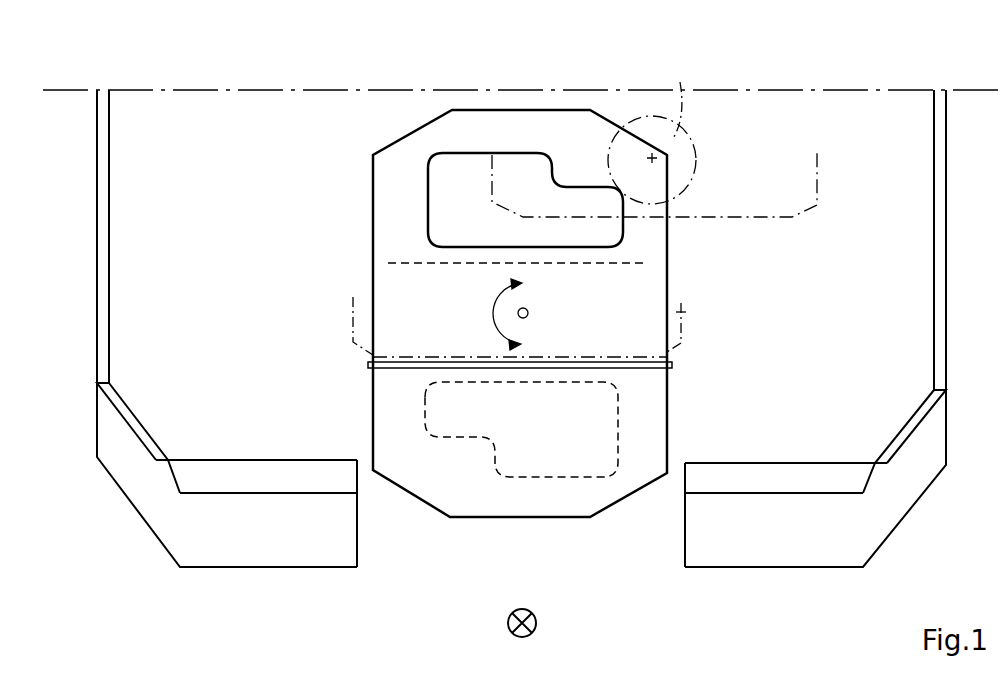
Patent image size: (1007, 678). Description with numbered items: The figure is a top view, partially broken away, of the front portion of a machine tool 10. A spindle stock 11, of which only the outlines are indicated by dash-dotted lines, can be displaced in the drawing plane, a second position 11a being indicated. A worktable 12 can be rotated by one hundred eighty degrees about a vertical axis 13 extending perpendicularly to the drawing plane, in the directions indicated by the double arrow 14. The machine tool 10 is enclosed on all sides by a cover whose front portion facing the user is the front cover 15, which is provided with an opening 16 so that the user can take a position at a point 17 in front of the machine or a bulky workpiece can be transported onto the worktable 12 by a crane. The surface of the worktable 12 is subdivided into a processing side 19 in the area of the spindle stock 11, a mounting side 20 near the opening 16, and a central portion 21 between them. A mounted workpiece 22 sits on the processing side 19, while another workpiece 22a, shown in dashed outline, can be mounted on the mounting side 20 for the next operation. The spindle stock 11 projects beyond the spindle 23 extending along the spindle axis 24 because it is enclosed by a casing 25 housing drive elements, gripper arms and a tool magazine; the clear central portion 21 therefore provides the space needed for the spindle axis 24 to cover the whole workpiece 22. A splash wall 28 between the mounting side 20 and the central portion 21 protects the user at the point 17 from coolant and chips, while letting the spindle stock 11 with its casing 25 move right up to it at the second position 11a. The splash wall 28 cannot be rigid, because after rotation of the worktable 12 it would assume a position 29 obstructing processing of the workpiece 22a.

The machine tool 10 is at (775, 63).
The spindle stock 11 is at (763, 192).
The second position 11a is at (686, 312).
The worktable 12 is at (462, 313).
The vertical axis 13 is at (528, 313).
The double arrow 14 is at (493, 313).
The front cover 15 is at (836, 547).
The opening 16 is at (358, 530).
The point 17 is at (538, 630).
The processing side 19 is at (390, 187).
The mounting side 20 is at (393, 404).
The central portion 21 is at (397, 313).
The workpiece 22 is at (467, 177).
The workpiece 22a is at (539, 468).
The spindle 23 is at (682, 97).
The spindle axis 24 is at (651, 157).
The casing 25 is at (697, 220).
The splash wall 28 is at (674, 376).
The position 29 is at (603, 263).